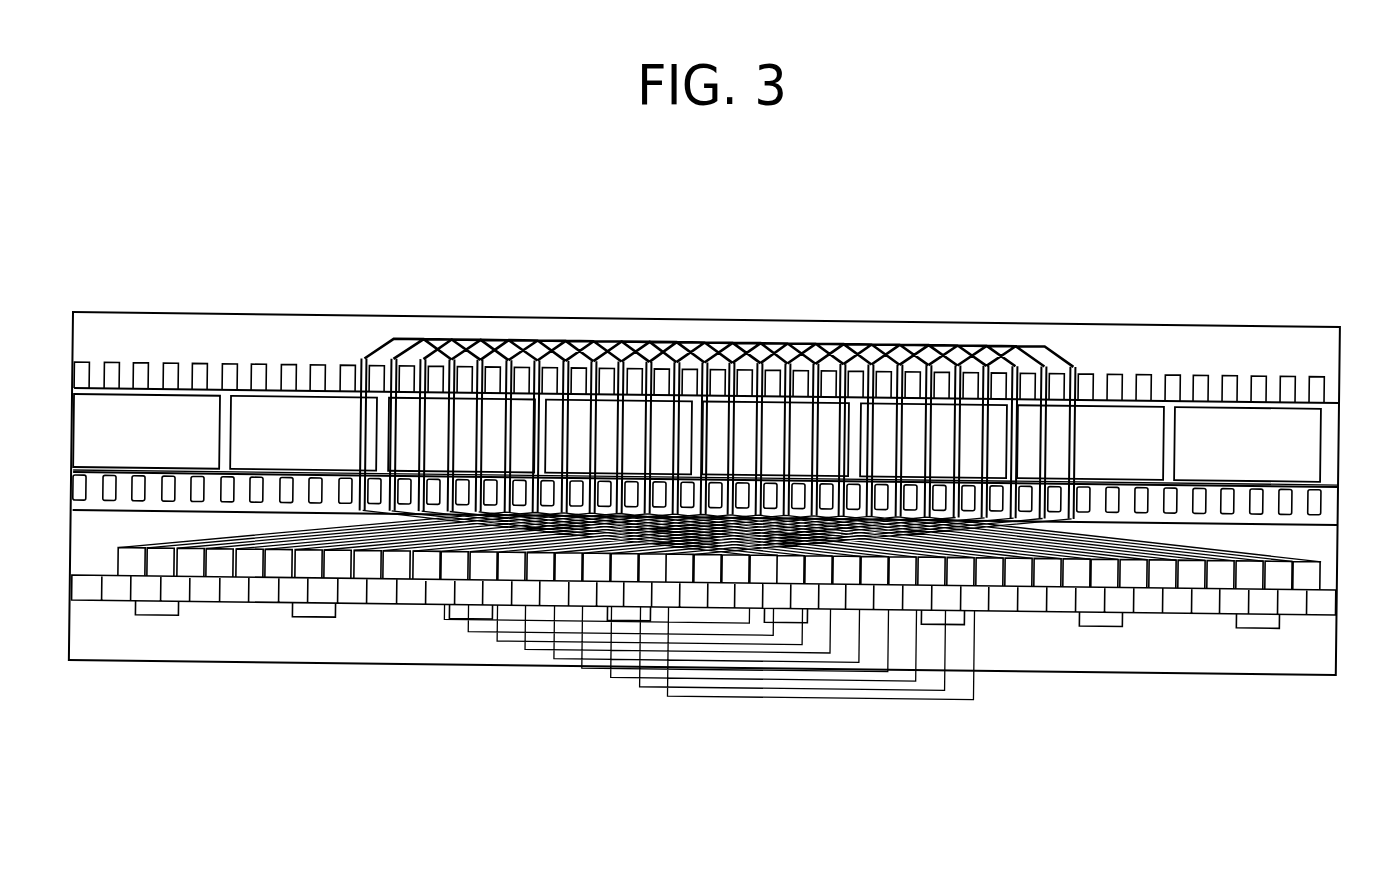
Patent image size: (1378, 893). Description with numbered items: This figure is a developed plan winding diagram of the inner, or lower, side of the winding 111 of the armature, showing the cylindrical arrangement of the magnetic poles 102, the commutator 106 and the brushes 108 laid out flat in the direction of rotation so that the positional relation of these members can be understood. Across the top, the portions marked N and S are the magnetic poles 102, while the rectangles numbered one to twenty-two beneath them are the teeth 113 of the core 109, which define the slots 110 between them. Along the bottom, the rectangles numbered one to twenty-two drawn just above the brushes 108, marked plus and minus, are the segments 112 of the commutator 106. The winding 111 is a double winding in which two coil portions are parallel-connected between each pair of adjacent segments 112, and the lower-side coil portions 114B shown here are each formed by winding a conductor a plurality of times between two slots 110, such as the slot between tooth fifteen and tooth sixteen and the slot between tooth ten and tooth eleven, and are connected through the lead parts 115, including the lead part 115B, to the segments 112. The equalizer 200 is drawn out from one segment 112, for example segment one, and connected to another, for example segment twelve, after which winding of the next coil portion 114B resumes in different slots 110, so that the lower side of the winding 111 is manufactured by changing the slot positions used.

The equalizer 200 is at (717, 692).
The core 109 is at (1331, 425).
The winding 111 is at (905, 335).
The lower-side coil portion 114B is at (428, 336).
The slot 110 is at (390, 454).
The magnetic pole 102 is at (459, 452).
The tooth 113 is at (1139, 487).
The commutator 106 is at (938, 557).
The brush 108 is at (631, 610).
The segment 112 is at (557, 647).
The lead part 115 is at (568, 527).
The lead part of lower-side coil portion 115B is at (475, 544).